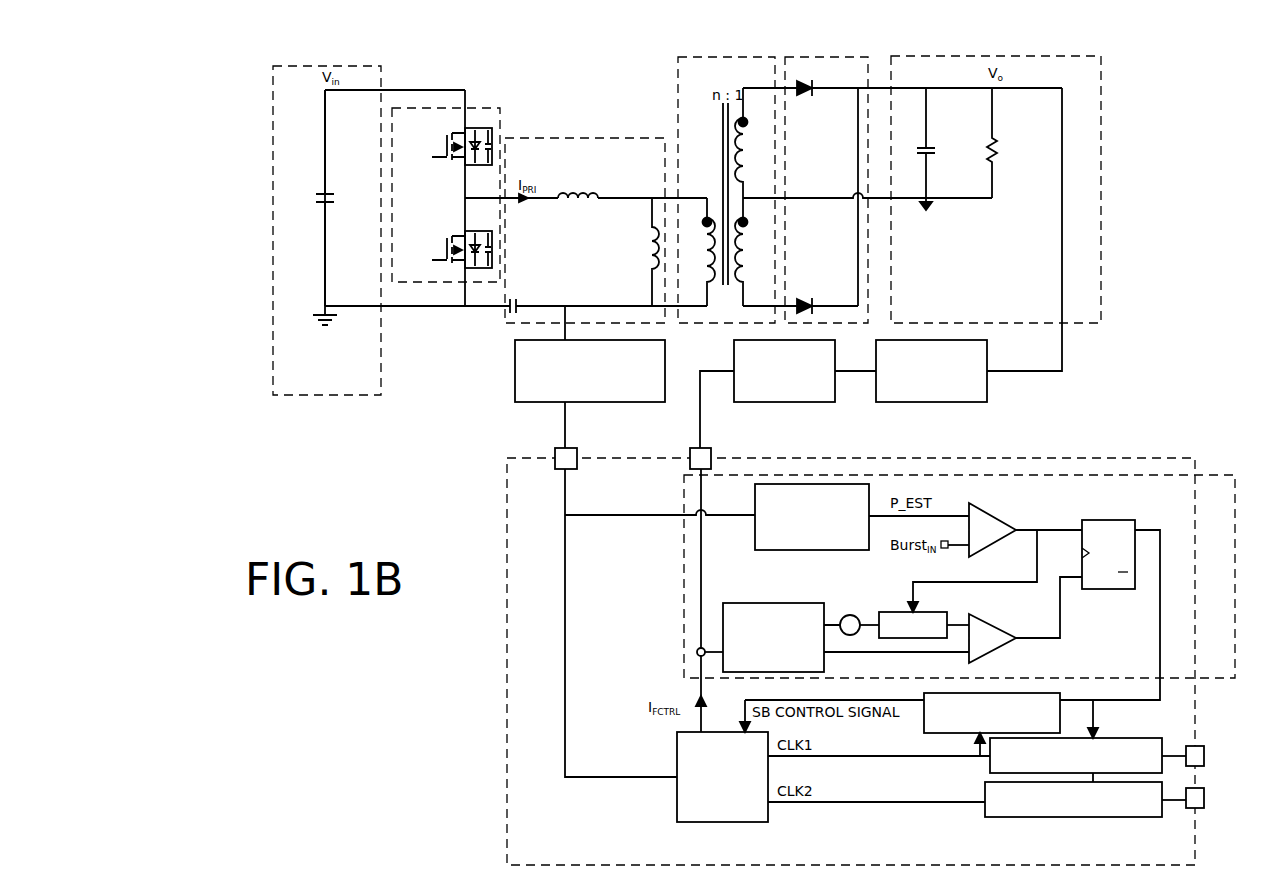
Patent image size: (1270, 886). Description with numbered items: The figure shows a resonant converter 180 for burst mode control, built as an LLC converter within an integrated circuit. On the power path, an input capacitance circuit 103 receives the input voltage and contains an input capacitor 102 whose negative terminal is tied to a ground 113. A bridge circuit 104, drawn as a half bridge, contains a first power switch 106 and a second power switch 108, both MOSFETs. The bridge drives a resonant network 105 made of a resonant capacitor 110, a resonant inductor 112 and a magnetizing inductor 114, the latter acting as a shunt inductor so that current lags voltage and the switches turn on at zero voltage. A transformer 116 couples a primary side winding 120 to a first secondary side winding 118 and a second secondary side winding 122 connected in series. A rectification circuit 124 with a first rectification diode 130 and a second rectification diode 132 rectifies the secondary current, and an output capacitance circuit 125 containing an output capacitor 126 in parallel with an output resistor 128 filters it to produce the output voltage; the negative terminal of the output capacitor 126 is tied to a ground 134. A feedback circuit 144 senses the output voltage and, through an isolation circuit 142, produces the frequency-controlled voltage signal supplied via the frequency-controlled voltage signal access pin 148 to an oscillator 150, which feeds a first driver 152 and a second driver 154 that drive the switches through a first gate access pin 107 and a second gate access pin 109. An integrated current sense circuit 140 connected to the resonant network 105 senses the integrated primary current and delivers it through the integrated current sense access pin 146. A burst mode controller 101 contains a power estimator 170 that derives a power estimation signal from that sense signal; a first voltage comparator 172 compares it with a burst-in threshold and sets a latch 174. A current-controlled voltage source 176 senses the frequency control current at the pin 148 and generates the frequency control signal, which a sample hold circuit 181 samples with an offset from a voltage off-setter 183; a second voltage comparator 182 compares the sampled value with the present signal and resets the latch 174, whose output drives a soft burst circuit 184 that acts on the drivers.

The resonant converter 180 is at (230, 44).
The burst mode controller 101 is at (1235, 486).
The input capacitor 102 is at (322, 193).
The input capacitance circuit 103 is at (292, 66).
The bridge circuit 104 is at (474, 108).
The resonant network 105 is at (560, 138).
The first power switch 106 is at (452, 162).
The first gate access pin 107 is at (1202, 746).
The second power switch 108 is at (450, 240).
The second gate access pin 109 is at (1202, 808).
The resonant capacitor 110 is at (520, 304).
The resonant inductor 112 is at (598, 193).
The ground 113 is at (318, 320).
The magnetizing inductor 114 is at (650, 264).
The transformer 116 is at (678, 86).
The first secondary side winding 118 is at (740, 160).
The primary side winding 120 is at (712, 256).
The second secondary side winding 122 is at (742, 260).
The rectification circuit 124 is at (868, 57).
The output capacitance circuit 125 is at (1101, 72).
The output capacitor 126 is at (930, 148).
The output resistor 128 is at (996, 147).
The first rectification diode 130 is at (804, 94).
The second rectification diode 132 is at (804, 300).
The ground 134 is at (932, 208).
The integrated current sense circuit 140 is at (590, 377).
The isolation circuit 142 is at (788, 394).
The feedback circuit 144 is at (931, 371).
The integrated current sense access pin 146 is at (574, 454).
The frequency-controlled voltage signal access pin 148 is at (708, 452).
The oscillator 150 is at (719, 777).
The first driver 152 is at (1076, 755).
The second driver 154 is at (1073, 799).
The power estimator 170 is at (812, 517).
The first voltage comparator 172 is at (996, 518).
The latch 174 is at (1100, 520).
The current-controlled voltage source 176 is at (746, 603).
The sample hold circuit 181 is at (890, 612).
The second voltage comparator 182 is at (996, 628).
The voltage off-setter 183 is at (850, 615).
The soft burst circuit 184 is at (992, 713).